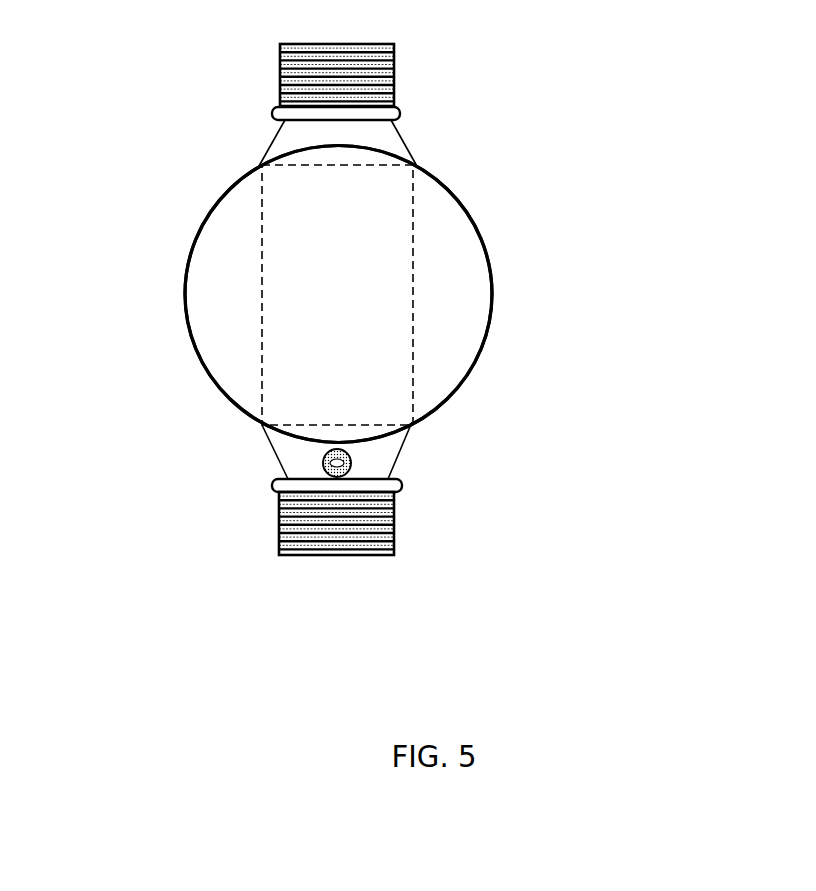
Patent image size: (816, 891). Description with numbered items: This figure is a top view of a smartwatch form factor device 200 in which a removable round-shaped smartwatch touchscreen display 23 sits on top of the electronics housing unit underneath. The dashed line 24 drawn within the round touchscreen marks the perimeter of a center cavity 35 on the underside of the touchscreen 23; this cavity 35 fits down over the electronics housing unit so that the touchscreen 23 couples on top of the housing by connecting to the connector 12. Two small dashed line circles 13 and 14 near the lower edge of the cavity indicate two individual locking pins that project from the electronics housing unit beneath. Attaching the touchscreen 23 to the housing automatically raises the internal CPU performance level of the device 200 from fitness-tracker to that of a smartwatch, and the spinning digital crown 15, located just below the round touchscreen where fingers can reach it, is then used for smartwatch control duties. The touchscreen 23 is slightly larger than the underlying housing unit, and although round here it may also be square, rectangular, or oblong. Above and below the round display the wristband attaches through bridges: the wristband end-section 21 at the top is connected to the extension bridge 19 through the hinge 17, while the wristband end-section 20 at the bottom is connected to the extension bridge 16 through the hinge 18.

The device 200 is at (158, 36).
The connector 12 is at (313, 173).
The locking pin 13 is at (300, 415).
The locking pin 14 is at (376, 415).
The digital crown 15 is at (322, 463).
The extension bridge 16 is at (401, 452).
The hinge 17 is at (402, 112).
The hinge 18 is at (272, 486).
The extension bridge 19 is at (404, 140).
The wristband end-section 20 is at (279, 522).
The wristband end-section 21 is at (396, 76).
The touchscreen display 23 is at (493, 295).
The dashed line 24 is at (262, 298).
The center cavity 35 is at (413, 294).